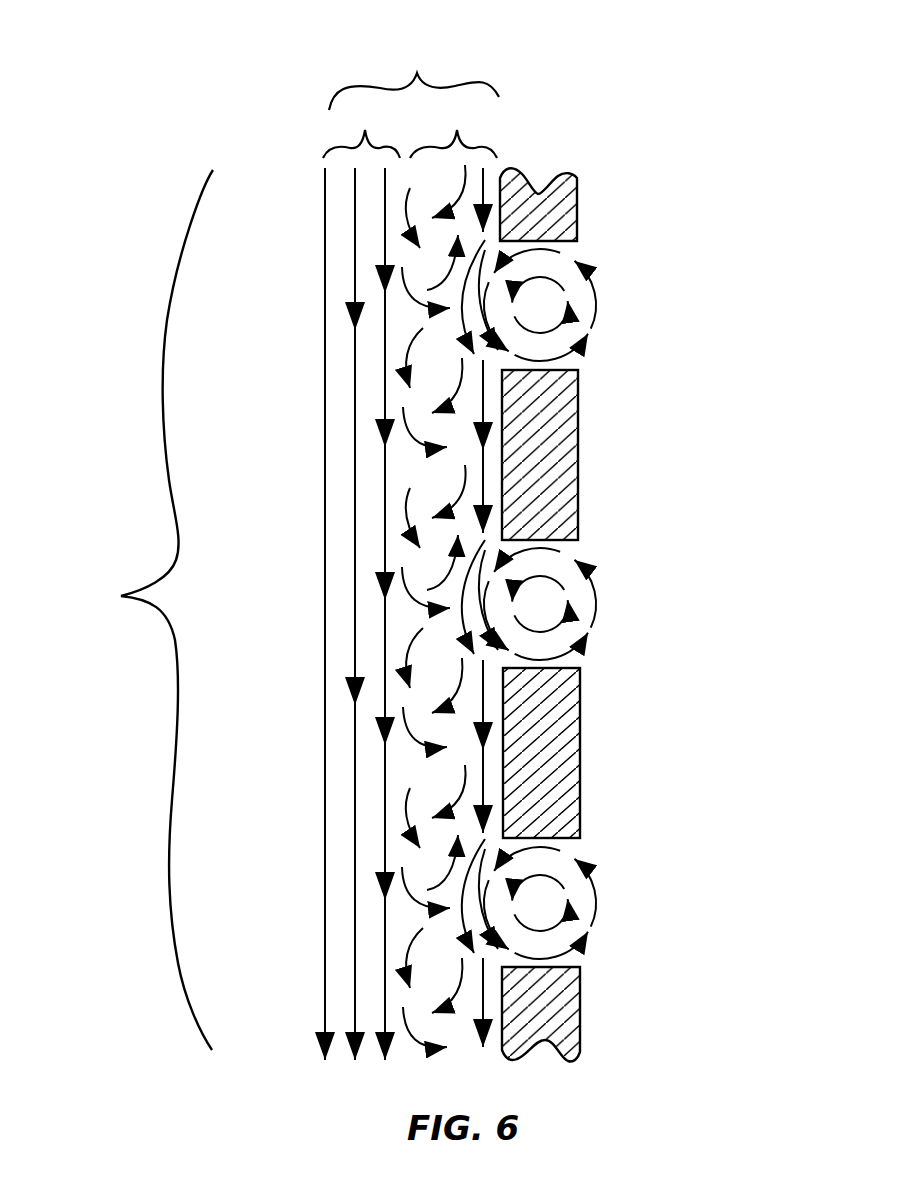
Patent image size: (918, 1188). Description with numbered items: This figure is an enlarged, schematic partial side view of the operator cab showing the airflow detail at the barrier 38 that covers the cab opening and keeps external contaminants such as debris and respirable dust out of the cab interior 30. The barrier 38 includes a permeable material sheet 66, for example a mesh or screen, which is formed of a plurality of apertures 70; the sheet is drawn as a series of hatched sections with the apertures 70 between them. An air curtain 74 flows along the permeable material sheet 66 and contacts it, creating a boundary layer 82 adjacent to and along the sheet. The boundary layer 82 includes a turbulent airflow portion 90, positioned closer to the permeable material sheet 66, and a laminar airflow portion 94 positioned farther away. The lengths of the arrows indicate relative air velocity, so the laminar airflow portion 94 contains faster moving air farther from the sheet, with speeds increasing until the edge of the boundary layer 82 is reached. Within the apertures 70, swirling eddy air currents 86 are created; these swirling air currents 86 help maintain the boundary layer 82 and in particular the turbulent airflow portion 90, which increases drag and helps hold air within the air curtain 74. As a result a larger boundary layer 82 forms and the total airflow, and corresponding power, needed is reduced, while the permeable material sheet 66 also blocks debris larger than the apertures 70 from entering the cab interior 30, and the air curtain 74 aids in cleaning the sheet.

The cab interior 30 is at (840, 594).
The barrier 38 is at (150, 192).
The permeable material sheet 66 is at (560, 762).
The apertures 70 is at (645, 574).
The air curtain 74 is at (125, 610).
The boundary layer 82 is at (411, 549).
The swirling air currents 86 is at (626, 265).
The turbulent airflow portion 90 is at (450, 572).
The laminar airflow portion 94 is at (361, 578).